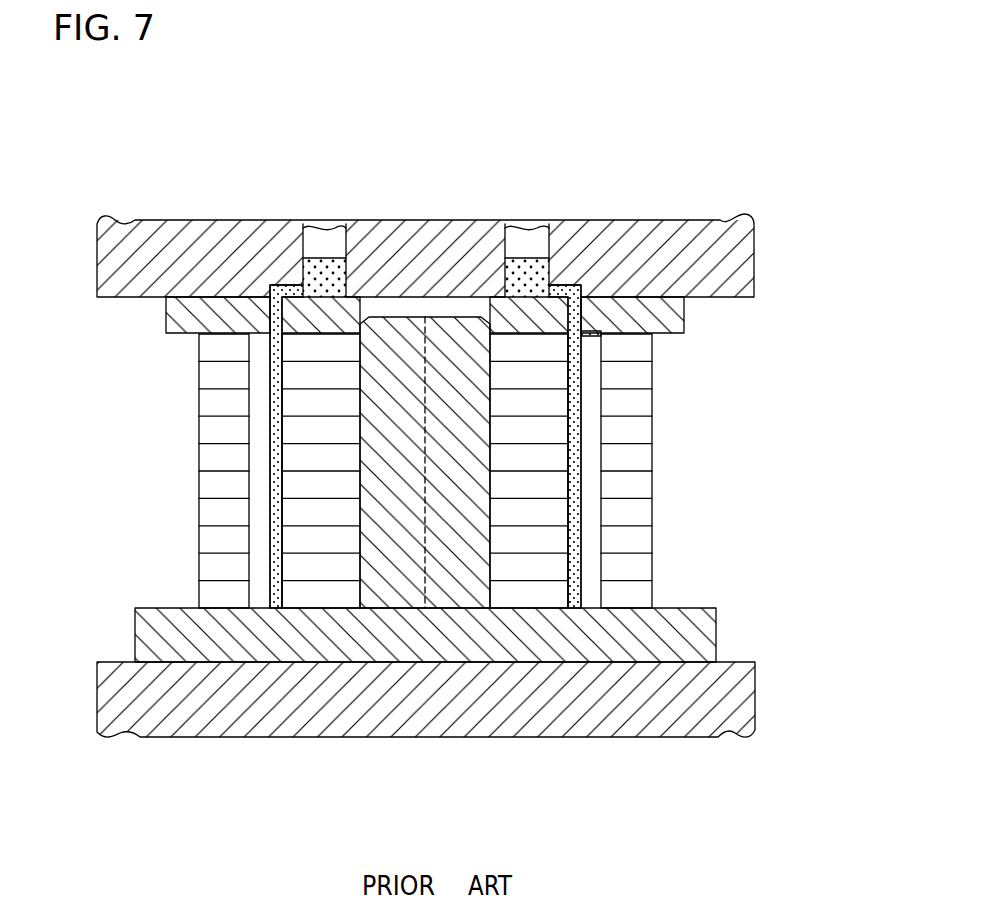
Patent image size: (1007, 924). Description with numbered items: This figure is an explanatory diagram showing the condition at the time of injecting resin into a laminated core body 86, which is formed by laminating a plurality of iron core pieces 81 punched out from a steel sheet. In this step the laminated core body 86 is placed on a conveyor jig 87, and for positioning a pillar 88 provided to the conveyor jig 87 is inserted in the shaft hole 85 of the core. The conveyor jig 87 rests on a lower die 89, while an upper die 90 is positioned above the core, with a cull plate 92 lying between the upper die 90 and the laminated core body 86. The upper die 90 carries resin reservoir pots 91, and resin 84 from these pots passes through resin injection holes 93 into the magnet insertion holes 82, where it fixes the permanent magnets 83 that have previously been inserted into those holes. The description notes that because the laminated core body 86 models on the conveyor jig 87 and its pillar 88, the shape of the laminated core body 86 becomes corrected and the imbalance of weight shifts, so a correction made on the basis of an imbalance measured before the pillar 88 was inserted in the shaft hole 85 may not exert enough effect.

The iron core pieces 81 is at (210, 433).
The magnet insertion holes 82 is at (272, 553).
The permanent magnets 83 is at (263, 355).
The resin 84 is at (276, 606).
The shaft hole 85 is at (362, 572).
The laminated core body 86 is at (666, 423).
The conveyor jig 87 is at (733, 635).
The pillar 88 is at (403, 347).
The lower die 89 is at (768, 703).
The upper die 90 is at (768, 252).
The resin reservoir pots 91 is at (320, 267).
The cull plate 92 is at (695, 320).
The resin injection holes 93 is at (277, 322).